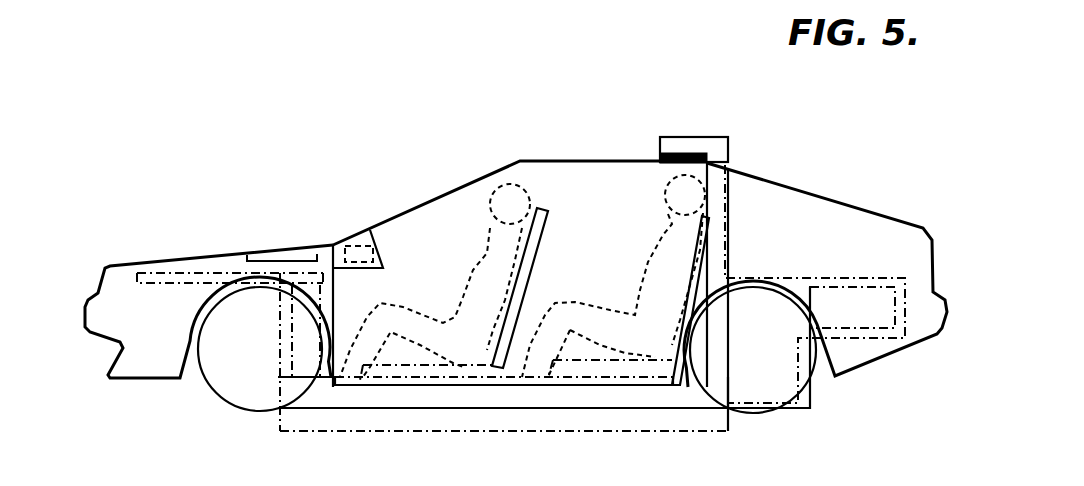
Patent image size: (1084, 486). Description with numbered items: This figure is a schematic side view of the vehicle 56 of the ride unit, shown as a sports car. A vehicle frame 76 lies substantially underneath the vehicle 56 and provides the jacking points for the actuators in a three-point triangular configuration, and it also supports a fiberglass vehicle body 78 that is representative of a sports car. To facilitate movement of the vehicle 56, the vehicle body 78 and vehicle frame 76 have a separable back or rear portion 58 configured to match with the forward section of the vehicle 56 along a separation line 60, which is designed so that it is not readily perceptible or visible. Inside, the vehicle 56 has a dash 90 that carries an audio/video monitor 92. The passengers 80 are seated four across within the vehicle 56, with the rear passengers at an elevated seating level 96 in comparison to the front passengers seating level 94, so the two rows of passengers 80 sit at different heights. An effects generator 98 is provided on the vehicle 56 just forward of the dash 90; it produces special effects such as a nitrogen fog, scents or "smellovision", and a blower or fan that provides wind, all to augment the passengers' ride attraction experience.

The vehicle 56 is at (316, 206).
The rear portion 58 is at (872, 237).
The separation line 60 is at (729, 168).
The vehicle frame 76 is at (595, 417).
The vehicle body 78 is at (185, 267).
The passengers 80 is at (495, 200).
The dash 90 is at (363, 240).
The audio/video monitor 92 is at (388, 254).
The front passengers seating level 94 is at (417, 365).
The elevated seating level 96 is at (607, 360).
The effects generator 98 is at (230, 244).